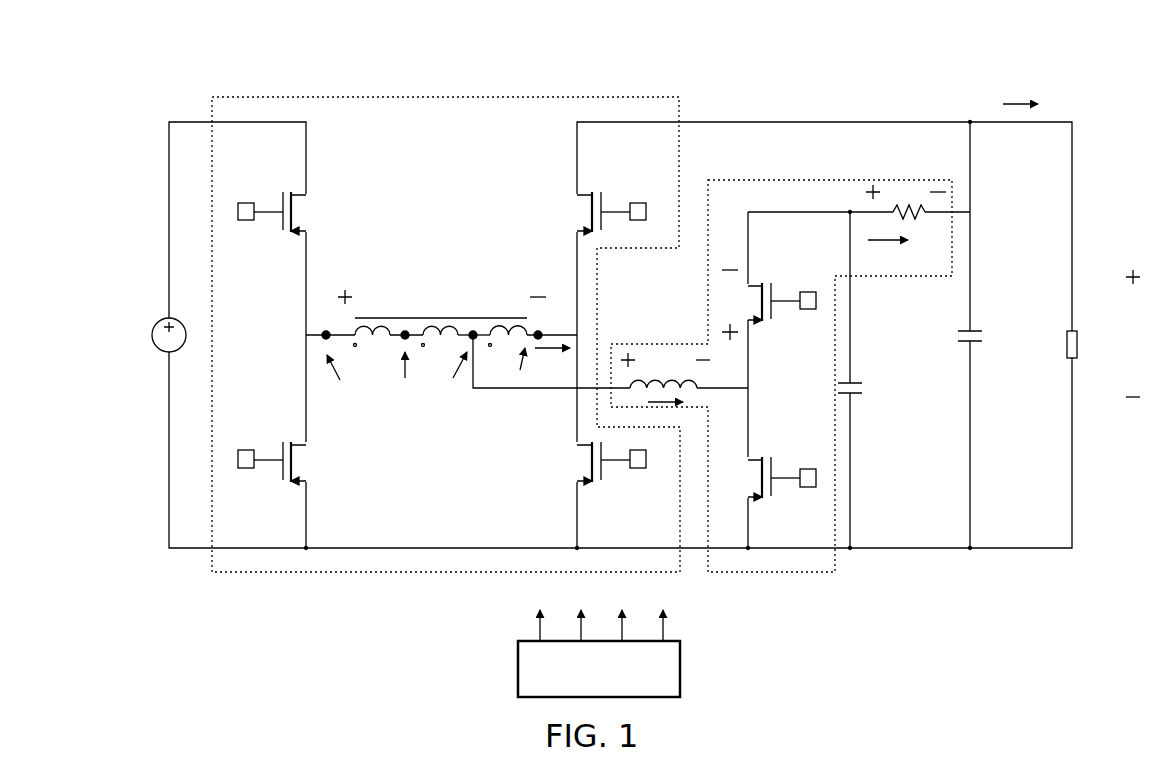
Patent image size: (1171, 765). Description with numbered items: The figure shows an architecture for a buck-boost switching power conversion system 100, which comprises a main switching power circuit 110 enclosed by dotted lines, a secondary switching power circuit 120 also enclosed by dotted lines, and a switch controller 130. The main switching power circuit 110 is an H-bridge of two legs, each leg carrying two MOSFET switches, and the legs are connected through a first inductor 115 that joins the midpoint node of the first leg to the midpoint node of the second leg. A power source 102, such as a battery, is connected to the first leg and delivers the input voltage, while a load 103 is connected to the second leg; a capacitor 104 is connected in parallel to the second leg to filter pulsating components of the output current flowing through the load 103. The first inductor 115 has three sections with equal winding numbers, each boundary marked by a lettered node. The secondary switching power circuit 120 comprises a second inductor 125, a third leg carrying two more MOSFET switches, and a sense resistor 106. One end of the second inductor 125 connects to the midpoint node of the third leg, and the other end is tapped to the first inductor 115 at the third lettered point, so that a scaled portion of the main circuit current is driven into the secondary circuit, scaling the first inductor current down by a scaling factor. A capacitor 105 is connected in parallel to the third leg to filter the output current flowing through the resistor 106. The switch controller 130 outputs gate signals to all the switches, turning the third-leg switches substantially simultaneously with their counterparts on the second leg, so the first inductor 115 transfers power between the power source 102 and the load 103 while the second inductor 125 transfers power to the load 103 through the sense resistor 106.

The buck-boost switching power conversion system 100 is at (303, 52).
The power source 102 is at (158, 344).
The load 103 is at (1075, 345).
The capacitor 104 is at (971, 340).
The capacitor 105 is at (858, 395).
The resistor 106 is at (919, 215).
The main switching power circuit 110 is at (445, 106).
The first inductor 115 is at (394, 300).
The secondary switching power circuit 120 is at (762, 198).
The second inductor 125 is at (677, 381).
The switch controller 130 is at (680, 668).